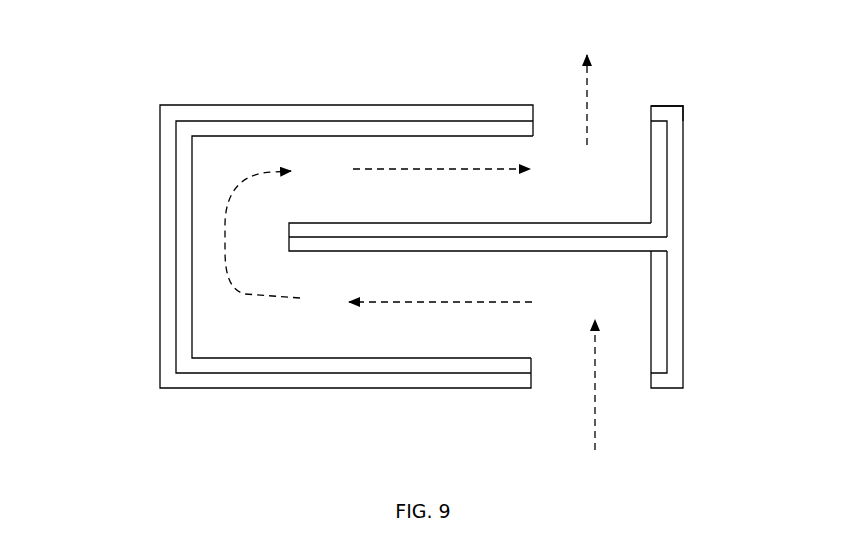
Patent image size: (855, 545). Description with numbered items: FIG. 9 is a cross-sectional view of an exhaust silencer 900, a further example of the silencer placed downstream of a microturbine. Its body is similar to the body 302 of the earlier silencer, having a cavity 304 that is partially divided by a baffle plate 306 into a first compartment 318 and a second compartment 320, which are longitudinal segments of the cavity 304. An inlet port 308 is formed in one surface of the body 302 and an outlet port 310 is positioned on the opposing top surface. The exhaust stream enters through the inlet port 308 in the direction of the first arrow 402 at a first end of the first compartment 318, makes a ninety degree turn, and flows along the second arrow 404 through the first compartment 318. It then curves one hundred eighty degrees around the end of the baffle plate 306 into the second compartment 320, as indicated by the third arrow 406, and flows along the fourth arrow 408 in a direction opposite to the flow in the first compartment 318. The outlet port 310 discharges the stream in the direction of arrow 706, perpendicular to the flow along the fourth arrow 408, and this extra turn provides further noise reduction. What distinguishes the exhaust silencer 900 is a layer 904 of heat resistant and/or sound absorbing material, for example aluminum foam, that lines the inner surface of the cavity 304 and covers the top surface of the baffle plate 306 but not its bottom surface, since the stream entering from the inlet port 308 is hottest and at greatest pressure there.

The exhaust silencer 900 is at (52, 31).
The body 302 is at (167, 105).
The cavity 304 is at (207, 248).
The layer 904 is at (187, 322).
The baffle plate 306 is at (617, 255).
The inlet port 308 is at (617, 387).
The outlet port 310 is at (613, 117).
The first compartment 318 is at (308, 330).
The second compartment 320 is at (324, 192).
The first arrow 402 is at (595, 418).
The second arrow 404 is at (477, 302).
The third arrow 406 is at (277, 170).
The fourth arrow 408 is at (472, 168).
The arrow 706 is at (582, 88).